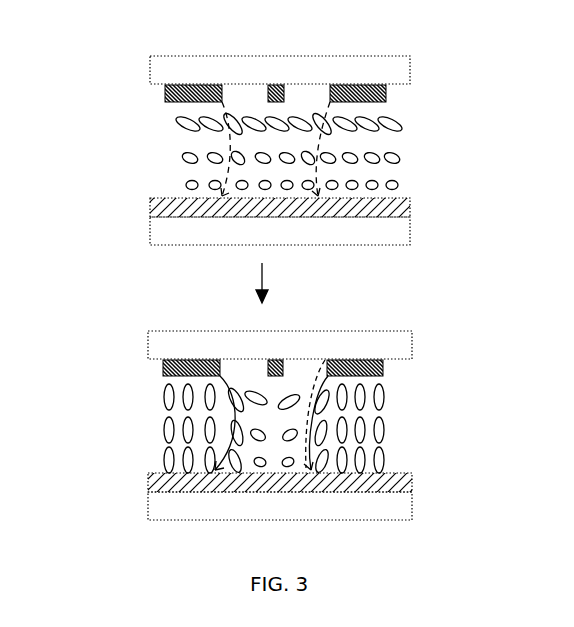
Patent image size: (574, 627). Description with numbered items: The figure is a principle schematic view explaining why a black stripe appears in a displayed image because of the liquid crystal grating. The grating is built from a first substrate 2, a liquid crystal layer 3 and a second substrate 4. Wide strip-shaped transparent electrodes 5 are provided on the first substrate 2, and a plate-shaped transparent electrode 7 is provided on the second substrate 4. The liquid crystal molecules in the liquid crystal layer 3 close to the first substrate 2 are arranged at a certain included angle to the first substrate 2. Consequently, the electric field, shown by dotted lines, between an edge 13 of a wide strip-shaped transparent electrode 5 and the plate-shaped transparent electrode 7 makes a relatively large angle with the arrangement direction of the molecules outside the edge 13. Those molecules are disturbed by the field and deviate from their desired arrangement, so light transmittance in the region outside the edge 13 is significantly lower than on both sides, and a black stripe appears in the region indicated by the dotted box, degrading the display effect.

The first substrate 2 is at (150, 73).
The liquid crystal layer 3 is at (398, 116).
The second substrate 4 is at (150, 232).
The wide strip-shaped transparent electrode 5 is at (172, 360).
The plate-shaped transparent electrode 7 is at (150, 205).
The edge of the wide strip-shaped transparent electrode 13 is at (326, 108).